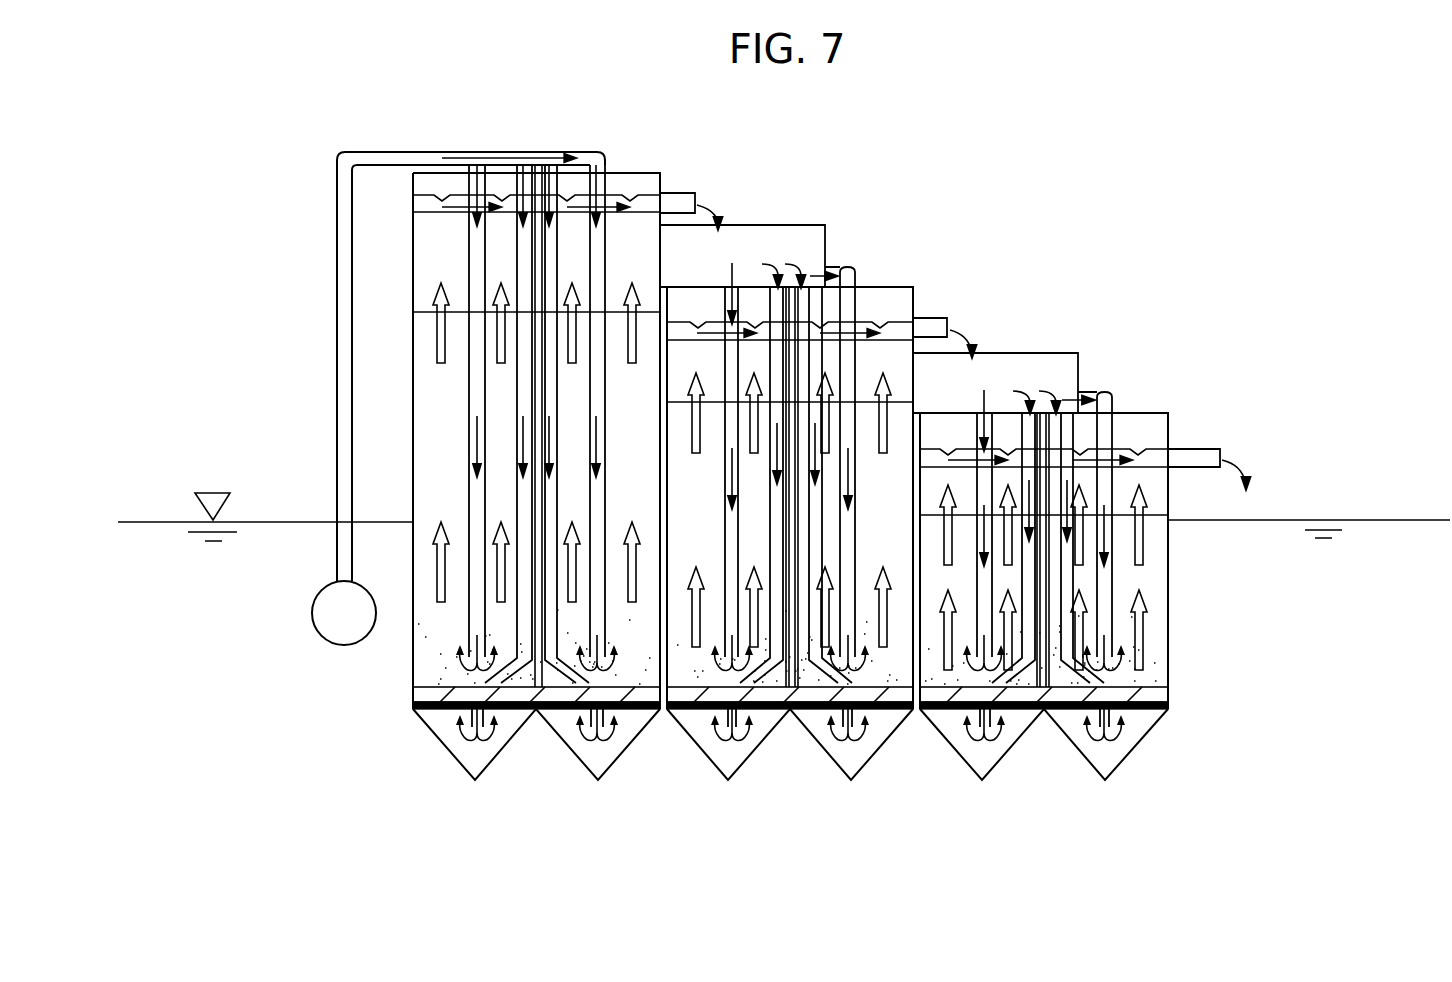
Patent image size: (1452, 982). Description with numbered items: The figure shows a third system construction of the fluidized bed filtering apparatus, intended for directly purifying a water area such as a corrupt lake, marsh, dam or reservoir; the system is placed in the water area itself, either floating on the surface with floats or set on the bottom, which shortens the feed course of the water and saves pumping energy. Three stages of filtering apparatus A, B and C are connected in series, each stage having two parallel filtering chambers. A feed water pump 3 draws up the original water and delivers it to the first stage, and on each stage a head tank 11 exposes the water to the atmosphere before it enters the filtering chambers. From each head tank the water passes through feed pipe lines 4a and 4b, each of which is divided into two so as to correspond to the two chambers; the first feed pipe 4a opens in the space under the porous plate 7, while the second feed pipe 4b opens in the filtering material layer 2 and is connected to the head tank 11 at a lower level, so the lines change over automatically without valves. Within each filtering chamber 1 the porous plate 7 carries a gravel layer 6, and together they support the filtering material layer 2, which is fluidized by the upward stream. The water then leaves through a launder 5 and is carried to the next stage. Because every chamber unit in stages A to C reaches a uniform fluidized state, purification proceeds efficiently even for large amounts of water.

The filtering chamber 1 is at (412, 400).
The filtering material layer 2 is at (1147, 582).
The feed water pump 3 is at (312, 610).
The first feed pipe 4a is at (573, 217).
The second feed pipe 4b is at (641, 218).
The launder 5 is at (672, 192).
The gravel layer 6 is at (1155, 692).
The porous plate 7 is at (1145, 710).
The head tank 11 is at (815, 225).
The filtering apparatus stage A is at (537, 795).
The filtering apparatus stage B is at (790, 795).
The filtering apparatus stage C is at (1045, 795).